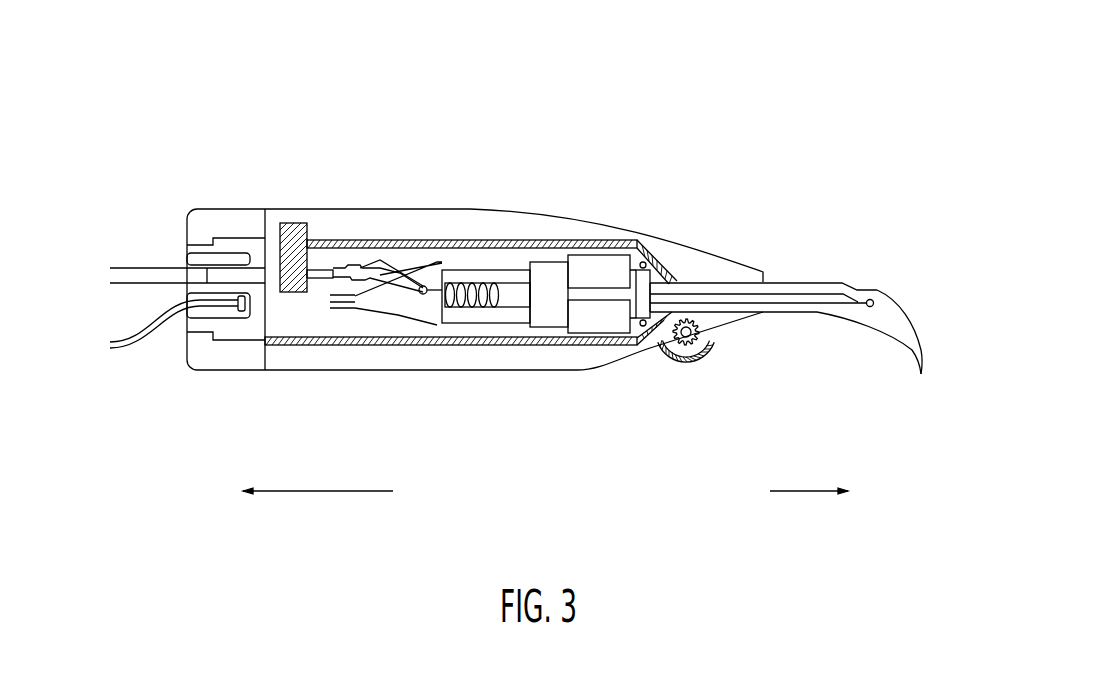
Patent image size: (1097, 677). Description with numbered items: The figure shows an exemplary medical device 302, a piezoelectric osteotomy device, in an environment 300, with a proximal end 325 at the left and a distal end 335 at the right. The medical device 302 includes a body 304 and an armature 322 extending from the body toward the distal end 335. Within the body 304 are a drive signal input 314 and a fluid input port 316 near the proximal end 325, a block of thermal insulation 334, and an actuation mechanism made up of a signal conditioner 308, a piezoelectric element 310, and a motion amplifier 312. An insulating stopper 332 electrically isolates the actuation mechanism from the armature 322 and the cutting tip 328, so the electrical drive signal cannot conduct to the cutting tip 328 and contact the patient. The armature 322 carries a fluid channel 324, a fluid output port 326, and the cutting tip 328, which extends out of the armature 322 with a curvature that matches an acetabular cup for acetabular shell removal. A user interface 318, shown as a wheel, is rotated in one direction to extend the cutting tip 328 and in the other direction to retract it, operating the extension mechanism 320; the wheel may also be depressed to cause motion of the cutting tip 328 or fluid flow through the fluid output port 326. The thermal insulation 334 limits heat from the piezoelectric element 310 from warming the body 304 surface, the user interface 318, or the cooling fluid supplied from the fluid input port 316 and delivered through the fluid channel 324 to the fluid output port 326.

The environment 300 is at (563, 52).
The medical device 302 is at (278, 53).
The body 304 is at (375, 209).
The signal conditioner 308 is at (447, 283).
The piezoelectric element 310 is at (462, 305).
The motion amplifier 312 is at (548, 272).
The drive signal input 314 is at (188, 268).
The fluid input port 316 is at (187, 303).
The user interface 318 is at (682, 357).
The extension mechanism 320 is at (700, 330).
The armature 322 is at (813, 282).
The fluid channel 324 is at (775, 282).
The proximal end 325 is at (308, 491).
The fluid output port 326 is at (897, 277).
The cutting tip 328 is at (921, 374).
The insulating stopper 332 is at (515, 297).
The thermal insulation 334 is at (297, 222).
The distal end 335 is at (770, 491).